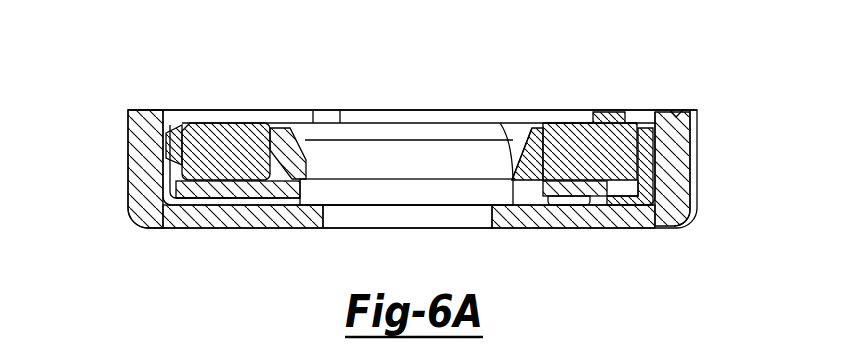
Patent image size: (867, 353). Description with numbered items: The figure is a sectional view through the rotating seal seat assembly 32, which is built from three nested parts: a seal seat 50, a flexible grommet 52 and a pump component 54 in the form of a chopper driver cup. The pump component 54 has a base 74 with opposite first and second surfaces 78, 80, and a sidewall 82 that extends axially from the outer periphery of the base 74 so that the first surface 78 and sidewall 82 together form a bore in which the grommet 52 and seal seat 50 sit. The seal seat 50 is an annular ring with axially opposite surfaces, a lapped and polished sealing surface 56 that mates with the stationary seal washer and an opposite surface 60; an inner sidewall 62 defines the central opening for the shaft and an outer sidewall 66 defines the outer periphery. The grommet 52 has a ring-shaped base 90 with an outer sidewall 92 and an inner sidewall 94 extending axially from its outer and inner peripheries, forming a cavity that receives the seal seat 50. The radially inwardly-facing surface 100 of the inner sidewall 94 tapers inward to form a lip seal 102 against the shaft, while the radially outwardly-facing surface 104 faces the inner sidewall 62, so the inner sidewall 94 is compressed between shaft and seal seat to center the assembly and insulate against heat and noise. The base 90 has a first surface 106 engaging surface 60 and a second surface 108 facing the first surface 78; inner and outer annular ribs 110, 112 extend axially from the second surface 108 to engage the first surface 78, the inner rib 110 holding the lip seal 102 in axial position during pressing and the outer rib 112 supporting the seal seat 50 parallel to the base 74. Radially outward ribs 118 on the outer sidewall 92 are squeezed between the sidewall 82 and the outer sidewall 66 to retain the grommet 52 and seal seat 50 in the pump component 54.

The rotating seal seat assembly 32 is at (644, 80).
The seal seat 50 is at (602, 150).
The flexible grommet 52 is at (537, 229).
The pump component 54 is at (681, 114).
The sealing surface 56 is at (230, 106).
The surface 60 is at (208, 186).
The inner sidewall 62 is at (283, 137).
The outer sidewall 66 is at (175, 140).
The base 74 is at (292, 229).
The first surface 78 is at (333, 208).
The second surface 80 is at (193, 229).
The sidewall 82 is at (128, 128).
The base 90 is at (267, 229).
The outer sidewall 92 is at (647, 153).
The inner sidewall 94 is at (520, 160).
The radially inwardly-facing surface 100 is at (502, 130).
The lip seal 102 is at (522, 229).
The radially outwardly-facing surface 104 is at (560, 140).
The first surface 106 is at (607, 229).
The second surface 108 is at (180, 229).
The inner annular rib 110 is at (302, 230).
The outer annular rib 112 is at (218, 229).
The ribs 118 is at (660, 170).